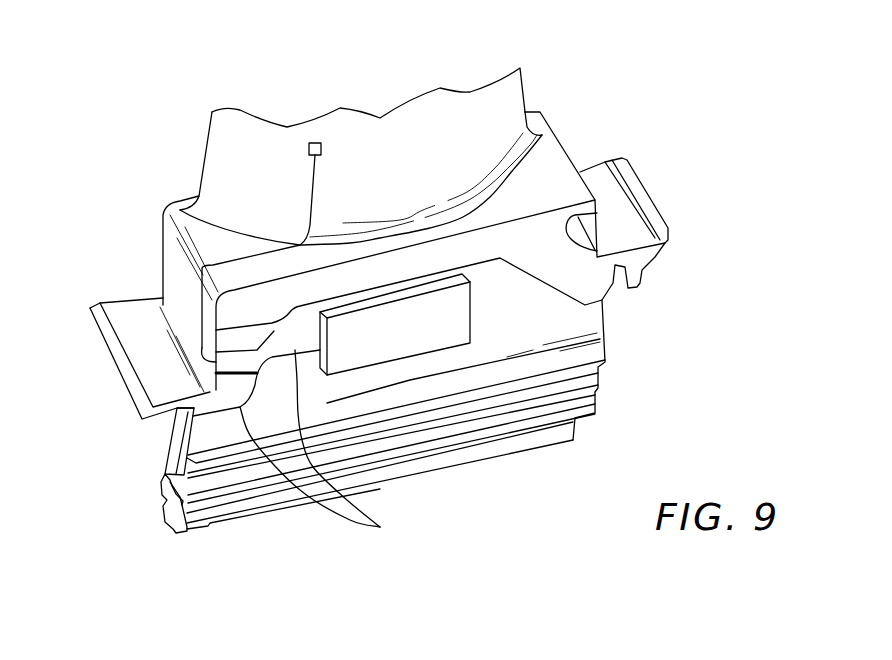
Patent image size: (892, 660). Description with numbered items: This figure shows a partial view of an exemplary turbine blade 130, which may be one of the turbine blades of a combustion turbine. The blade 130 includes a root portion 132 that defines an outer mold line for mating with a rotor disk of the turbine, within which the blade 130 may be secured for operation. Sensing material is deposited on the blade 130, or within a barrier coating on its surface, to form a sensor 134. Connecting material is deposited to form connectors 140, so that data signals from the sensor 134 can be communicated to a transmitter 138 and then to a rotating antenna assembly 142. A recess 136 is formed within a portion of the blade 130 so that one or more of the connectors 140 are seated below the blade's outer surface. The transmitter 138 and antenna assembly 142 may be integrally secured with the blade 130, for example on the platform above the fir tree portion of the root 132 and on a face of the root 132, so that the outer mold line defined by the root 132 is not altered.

The blade 130 is at (394, 148).
The root portion 132 is at (487, 465).
The sensor 134 is at (309, 149).
The recess 136 is at (212, 351).
The transmitter 138 is at (427, 346).
The connectors 140 is at (376, 527).
The rotating antenna assembly 142 is at (170, 428).